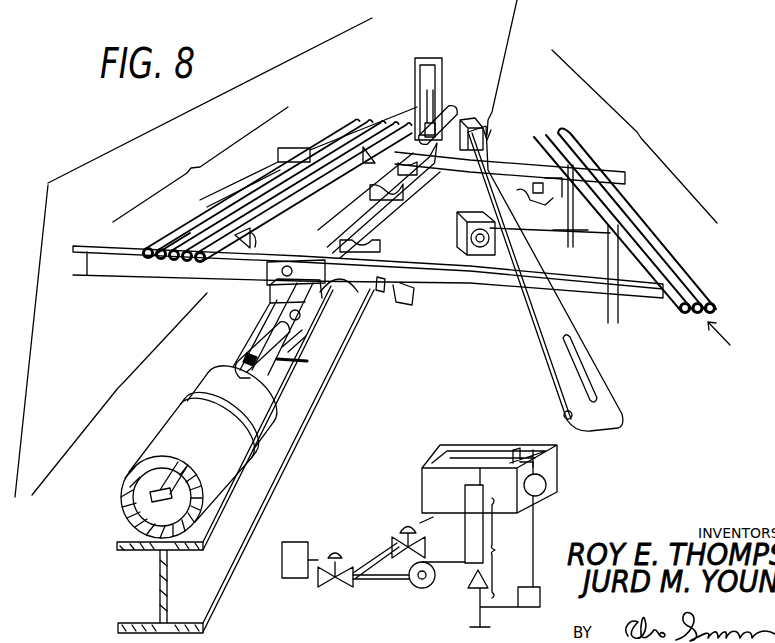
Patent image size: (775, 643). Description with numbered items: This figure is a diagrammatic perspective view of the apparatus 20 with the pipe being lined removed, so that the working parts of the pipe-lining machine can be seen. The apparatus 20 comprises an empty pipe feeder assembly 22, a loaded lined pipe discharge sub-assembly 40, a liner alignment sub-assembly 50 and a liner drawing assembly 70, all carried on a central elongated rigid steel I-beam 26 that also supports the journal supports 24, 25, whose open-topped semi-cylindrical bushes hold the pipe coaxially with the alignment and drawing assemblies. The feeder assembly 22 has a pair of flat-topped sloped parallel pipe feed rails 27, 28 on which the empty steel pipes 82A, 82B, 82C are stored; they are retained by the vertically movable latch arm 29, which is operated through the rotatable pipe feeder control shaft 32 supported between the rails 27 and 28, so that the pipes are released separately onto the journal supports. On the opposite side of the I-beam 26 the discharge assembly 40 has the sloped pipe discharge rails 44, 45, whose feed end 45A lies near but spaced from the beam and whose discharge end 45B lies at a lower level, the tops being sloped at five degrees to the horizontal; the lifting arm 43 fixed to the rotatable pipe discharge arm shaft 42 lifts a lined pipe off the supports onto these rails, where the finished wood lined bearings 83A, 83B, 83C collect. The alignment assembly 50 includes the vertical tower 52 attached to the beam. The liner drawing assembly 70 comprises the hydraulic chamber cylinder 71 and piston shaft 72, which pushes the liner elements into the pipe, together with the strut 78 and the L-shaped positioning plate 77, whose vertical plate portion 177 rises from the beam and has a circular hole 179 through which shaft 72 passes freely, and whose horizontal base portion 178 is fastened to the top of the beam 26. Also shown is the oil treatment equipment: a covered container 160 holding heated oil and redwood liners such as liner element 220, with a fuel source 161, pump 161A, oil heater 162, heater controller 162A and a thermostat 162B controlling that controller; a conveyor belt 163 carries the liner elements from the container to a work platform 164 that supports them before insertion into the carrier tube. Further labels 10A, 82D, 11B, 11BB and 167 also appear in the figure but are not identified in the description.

The apparatus 20 is at (193, 257).
The empty pipe feeder assembly 22 is at (200, 164).
The liner drawing assembly 70 is at (119, 394).
The loaded lined pipe discharge sub-assembly 40 is at (634, 136).
The apparatus 10A is at (505, 70).
The pipe feed rail 27 is at (118, 262).
The pipe discharge rail 45 is at (497, 277).
The feed end of rail 45A is at (410, 290).
The discharge end of rail 45B is at (647, 285).
The empty pipe 82A is at (198, 264).
The empty pipe 82B is at (170, 260).
The empty pipe 82C is at (165, 250).
The tube 82D is at (140, 258).
The pipe feed rail 28 is at (300, 148).
The latch arm 29 is at (258, 240).
The pipe discharge rail 44 is at (512, 174).
The liner alignment sub-assembly 50 is at (465, 75).
The vertical tower 52 is at (415, 88).
The work platform 164 is at (465, 118).
The pipe discharge arm shaft 42 is at (410, 210).
The journal support 24 is at (403, 192).
The pipe feeder control shaft 32 is at (352, 197).
The lifting arm 43 is at (383, 245).
The conveyor belt 163 is at (543, 368).
The liner element 220 is at (598, 388).
The lined pipe 83A is at (680, 312).
The lined pipe 83B is at (696, 314).
The lined pipe 83C is at (714, 311).
The tube bundle 11B is at (725, 343).
The tube bundle 11BB is at (640, 222).
The positioning plate 77 is at (263, 309).
The journal support 25 is at (358, 292).
The circular hole 179 is at (300, 317).
The vertical flat plate portion 177 is at (300, 328).
The strut 78 is at (240, 345).
The link 167 is at (282, 349).
The horizontal flat base portion 178 is at (260, 362).
The hydraulic piston chamber cylinder 71 is at (140, 460).
The piston shaft 72 is at (152, 497).
The I-beam 26 is at (270, 490).
The covered container 160 is at (433, 492).
The fuel source 161 is at (300, 568).
The pump 161A is at (435, 570).
The oil heater 162 is at (510, 548).
The heater controller 162A is at (538, 607).
The thermostat 162B is at (548, 490).